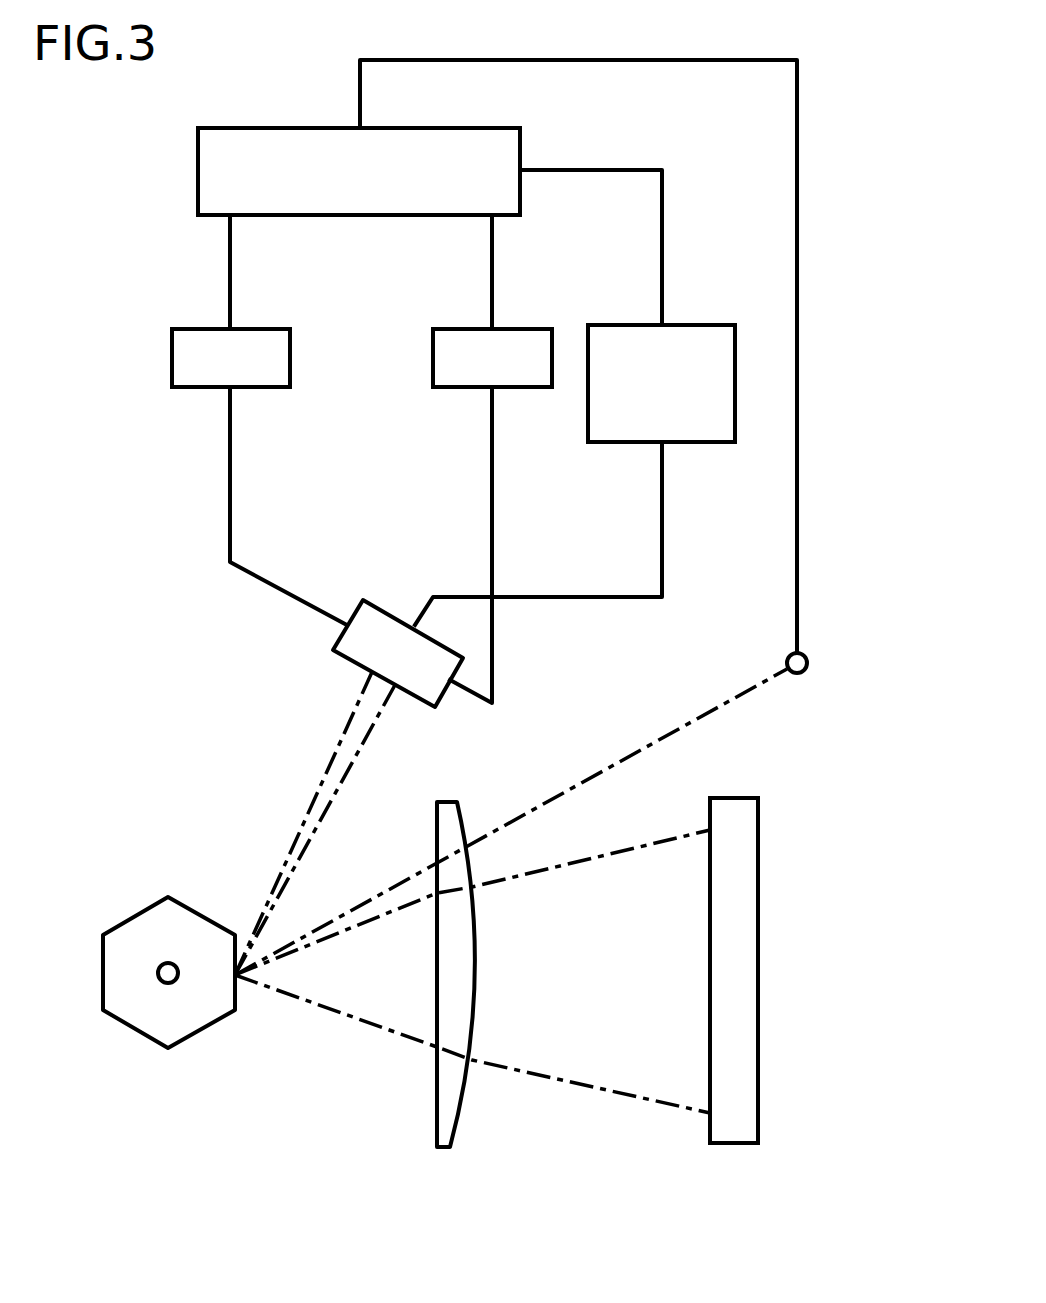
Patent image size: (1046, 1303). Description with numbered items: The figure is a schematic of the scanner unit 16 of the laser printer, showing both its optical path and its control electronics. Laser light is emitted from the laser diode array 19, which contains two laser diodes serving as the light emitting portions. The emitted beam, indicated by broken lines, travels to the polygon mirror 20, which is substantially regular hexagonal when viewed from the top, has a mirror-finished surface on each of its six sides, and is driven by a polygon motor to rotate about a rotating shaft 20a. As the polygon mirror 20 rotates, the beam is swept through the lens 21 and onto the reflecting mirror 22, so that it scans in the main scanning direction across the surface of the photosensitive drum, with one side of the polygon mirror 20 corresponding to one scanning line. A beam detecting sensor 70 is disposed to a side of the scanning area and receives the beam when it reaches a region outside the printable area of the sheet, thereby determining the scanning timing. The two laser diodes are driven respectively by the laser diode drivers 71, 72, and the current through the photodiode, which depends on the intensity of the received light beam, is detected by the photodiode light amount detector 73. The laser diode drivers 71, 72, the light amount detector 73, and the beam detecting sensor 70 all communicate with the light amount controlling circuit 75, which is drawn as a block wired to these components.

The scanner unit 16 is at (853, 735).
The laser diode array 19 is at (337, 637).
The polygon mirror 20 is at (177, 1017).
The rotating shaft 20a is at (178, 977).
The lens 21 is at (455, 1097).
The reflecting mirror 22 is at (735, 1095).
The beam detecting (BD) sensor 70 is at (787, 662).
The laser diode driver (LDD) 71 is at (200, 328).
The laser diode driver (LDD) 72 is at (472, 327).
The photodiode light amount detector 73 is at (623, 323).
The light amount controlling circuit 75 is at (287, 127).